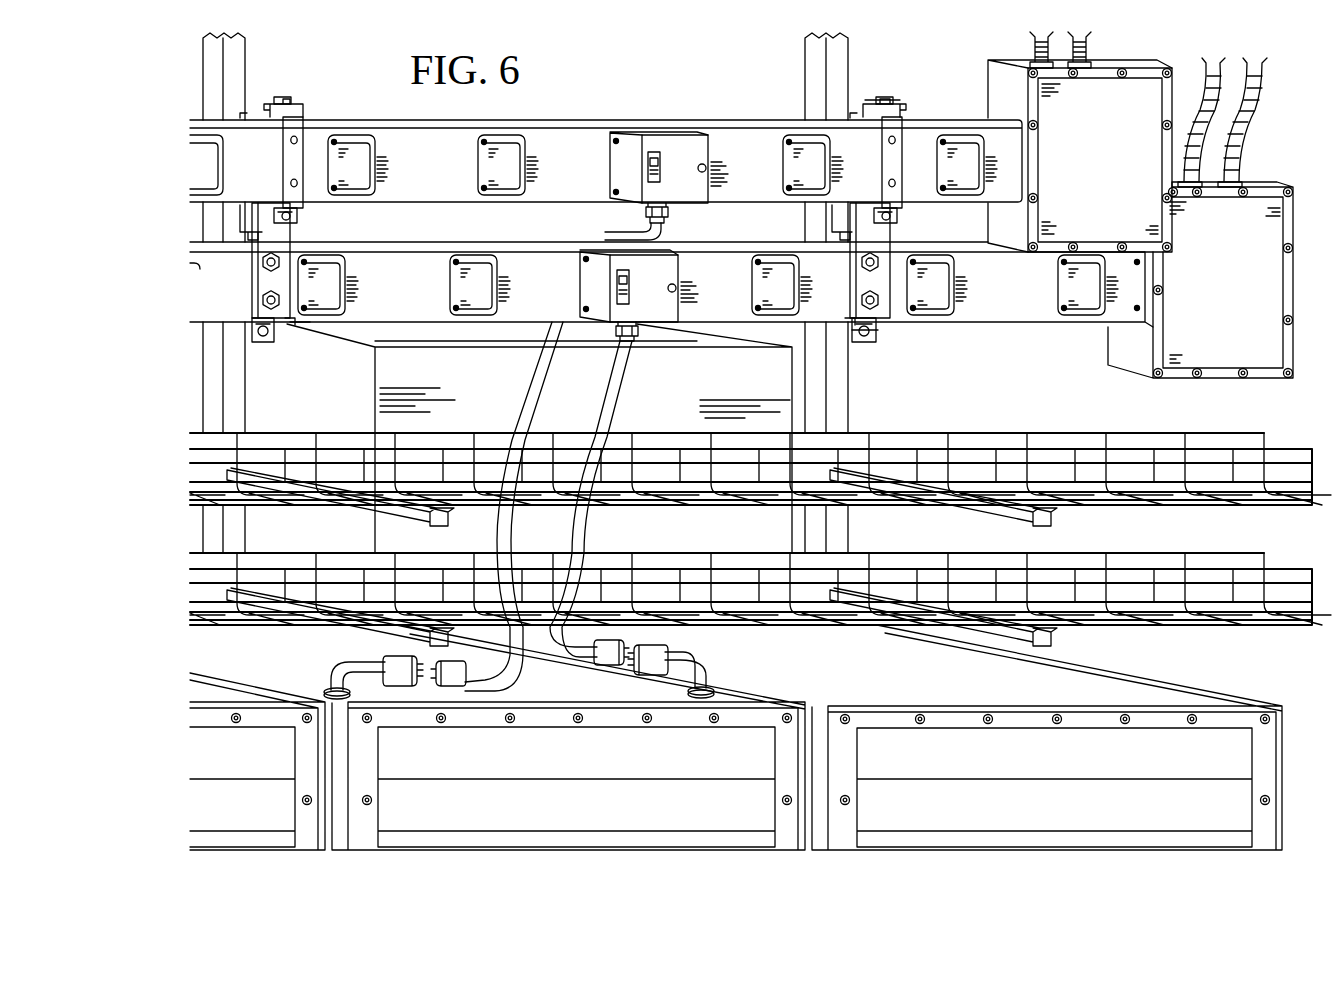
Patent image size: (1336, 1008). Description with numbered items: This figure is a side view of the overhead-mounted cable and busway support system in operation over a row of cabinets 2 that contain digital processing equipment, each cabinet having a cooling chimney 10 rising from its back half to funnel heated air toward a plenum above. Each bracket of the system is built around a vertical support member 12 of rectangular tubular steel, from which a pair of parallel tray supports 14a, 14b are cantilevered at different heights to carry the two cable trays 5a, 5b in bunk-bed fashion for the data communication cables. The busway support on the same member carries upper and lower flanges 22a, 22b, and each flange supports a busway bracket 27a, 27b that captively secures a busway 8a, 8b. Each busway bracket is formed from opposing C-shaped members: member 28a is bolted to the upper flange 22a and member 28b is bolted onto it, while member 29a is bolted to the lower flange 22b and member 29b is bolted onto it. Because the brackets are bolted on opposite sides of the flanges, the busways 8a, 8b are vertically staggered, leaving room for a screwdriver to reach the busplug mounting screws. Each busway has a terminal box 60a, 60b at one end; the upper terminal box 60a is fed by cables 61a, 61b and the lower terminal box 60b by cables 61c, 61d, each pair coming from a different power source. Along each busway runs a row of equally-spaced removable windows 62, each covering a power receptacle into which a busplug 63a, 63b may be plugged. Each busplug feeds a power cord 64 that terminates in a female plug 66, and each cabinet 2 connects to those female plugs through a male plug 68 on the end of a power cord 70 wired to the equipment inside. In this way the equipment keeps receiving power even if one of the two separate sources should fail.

The cabinets 2 is at (736, 737).
The cable tray 5a is at (1175, 437).
The cable tray 5b is at (1175, 557).
The busway 8a is at (731, 122).
The busway 8b is at (507, 326).
The cooling chimney 10 is at (406, 335).
The vertical support member 12 is at (240, 405).
The tray support 14a is at (372, 516).
The tray support 14b is at (372, 636).
The upper flange 22a is at (258, 116).
The lower flange 22b is at (282, 323).
The busway bracket 27a is at (897, 95).
The busway bracket 27b is at (892, 337).
The C-shaped member 28a is at (303, 112).
The C-shaped member 28b is at (268, 120).
The C-shaped member 29a is at (248, 326).
The C-shaped member 29b is at (270, 342).
The terminal box 60a is at (1080, 156).
The terminal box 60b is at (1200, 280).
The cable 61a is at (1030, 50).
The cable 61b is at (1088, 48).
The cable 61c is at (1215, 90).
The cable 61d is at (1237, 150).
The removable window 62 is at (500, 165).
The busplug 63a is at (660, 142).
The busplug 63b is at (657, 312).
The power cord 64 is at (512, 408).
The female plug 66 is at (605, 664).
The male plug 68 is at (393, 686).
The power cord 70 is at (338, 668).